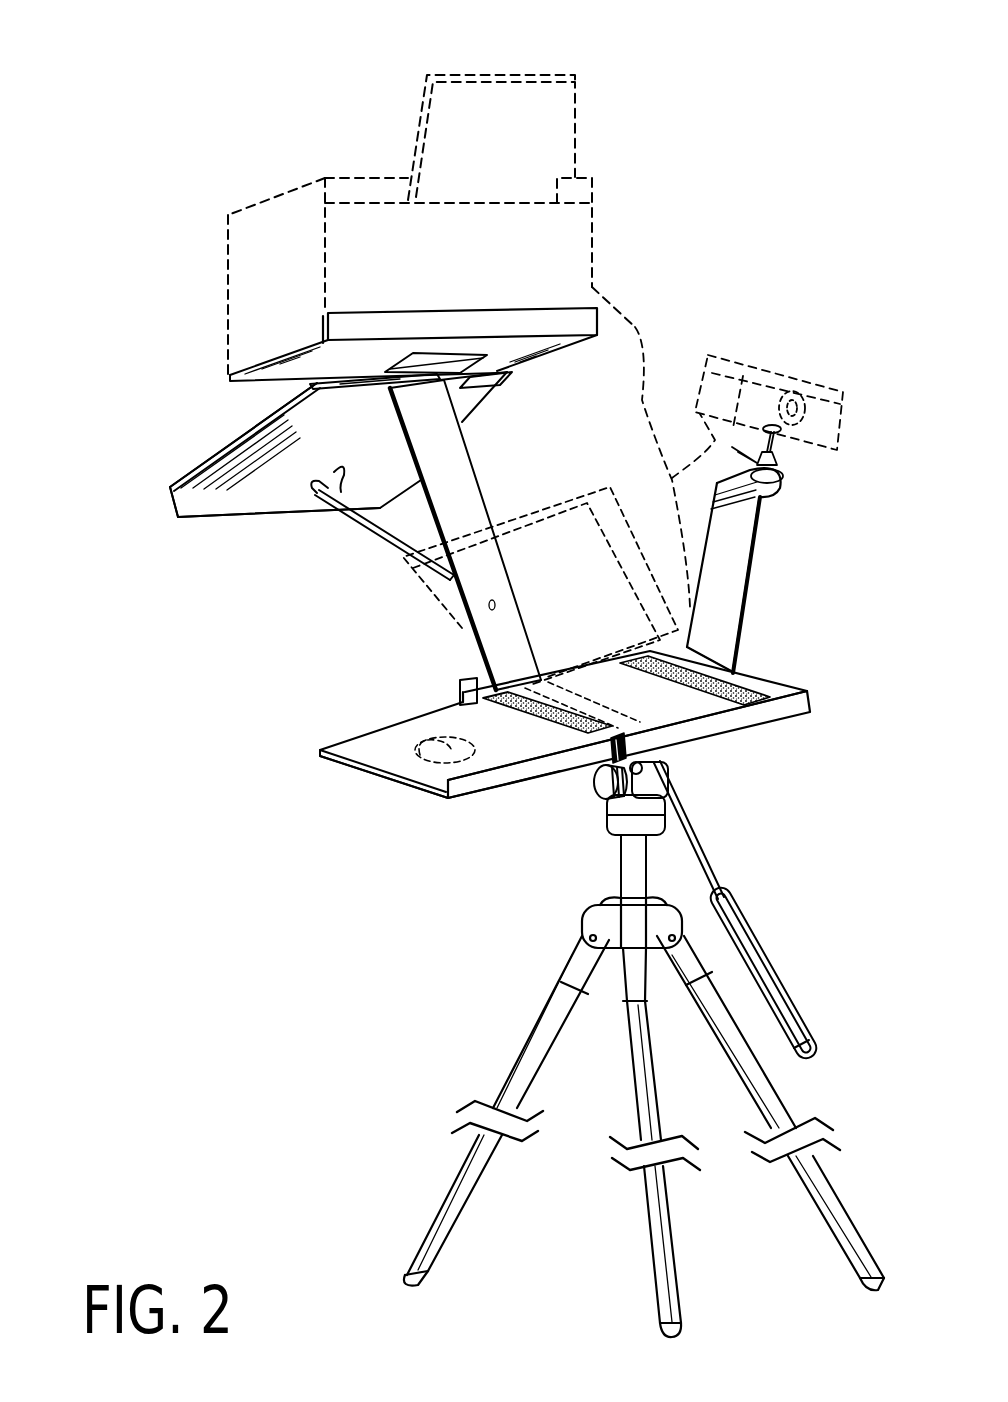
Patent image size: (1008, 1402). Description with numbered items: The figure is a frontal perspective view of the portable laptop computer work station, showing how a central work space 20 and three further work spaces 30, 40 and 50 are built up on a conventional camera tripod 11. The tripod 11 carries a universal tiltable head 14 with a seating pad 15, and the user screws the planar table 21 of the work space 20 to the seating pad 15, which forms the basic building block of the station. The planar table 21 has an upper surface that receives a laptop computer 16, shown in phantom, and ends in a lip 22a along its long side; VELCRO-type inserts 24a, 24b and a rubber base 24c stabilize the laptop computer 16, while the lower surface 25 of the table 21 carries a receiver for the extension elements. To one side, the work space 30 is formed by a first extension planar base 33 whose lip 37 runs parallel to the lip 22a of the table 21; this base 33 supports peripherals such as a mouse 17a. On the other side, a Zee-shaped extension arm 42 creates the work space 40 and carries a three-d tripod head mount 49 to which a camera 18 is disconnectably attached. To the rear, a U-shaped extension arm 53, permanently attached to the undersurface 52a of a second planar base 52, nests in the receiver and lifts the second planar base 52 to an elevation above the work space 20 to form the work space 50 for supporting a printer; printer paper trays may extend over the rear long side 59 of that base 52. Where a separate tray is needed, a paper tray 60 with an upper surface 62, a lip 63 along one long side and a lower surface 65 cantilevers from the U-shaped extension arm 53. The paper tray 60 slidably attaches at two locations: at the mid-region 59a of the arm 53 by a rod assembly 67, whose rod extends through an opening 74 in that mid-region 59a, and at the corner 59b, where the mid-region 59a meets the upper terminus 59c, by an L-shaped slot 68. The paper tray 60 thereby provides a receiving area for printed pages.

The camera tripod 11 is at (502, 1003).
The universal tiltable head 14 is at (621, 848).
The seating pad 15 is at (651, 840).
The laptop computer 16 is at (603, 483).
The mouse 17a is at (420, 755).
The camera 18 is at (813, 380).
The work space 20 is at (700, 785).
The planar table 21 is at (760, 628).
The lip 22a is at (757, 717).
The VELCRO-type insert 24a is at (727, 697).
The VELCRO-type insert 24b is at (558, 704).
The rubber base 24c is at (600, 752).
The lower surface 25 is at (612, 688).
The work space 30 is at (346, 710).
The first extension planar base 33 is at (392, 787).
The lip 37 is at (467, 788).
The work space 40 is at (775, 523).
The Zee-shaped extension arm 42 is at (756, 570).
The 3-d tripod head mount 49 is at (788, 466).
The work space 50 is at (542, 48).
The second planar base 52 is at (603, 320).
The undersurface 52a is at (352, 364).
The U-shaped extension arm 53 is at (490, 468).
The rear long side 59 is at (235, 396).
The mid-region 59a is at (475, 597).
The corner 59b is at (436, 390).
The upper terminus 59c is at (456, 358).
The paper tray 60 is at (243, 522).
The upper surface 62 is at (226, 470).
The lip 63 is at (172, 497).
The lower surface 65 is at (284, 492).
The rod assembly 67 is at (393, 545).
The L-shaped slot 68 is at (484, 392).
The opening 74 is at (492, 600).